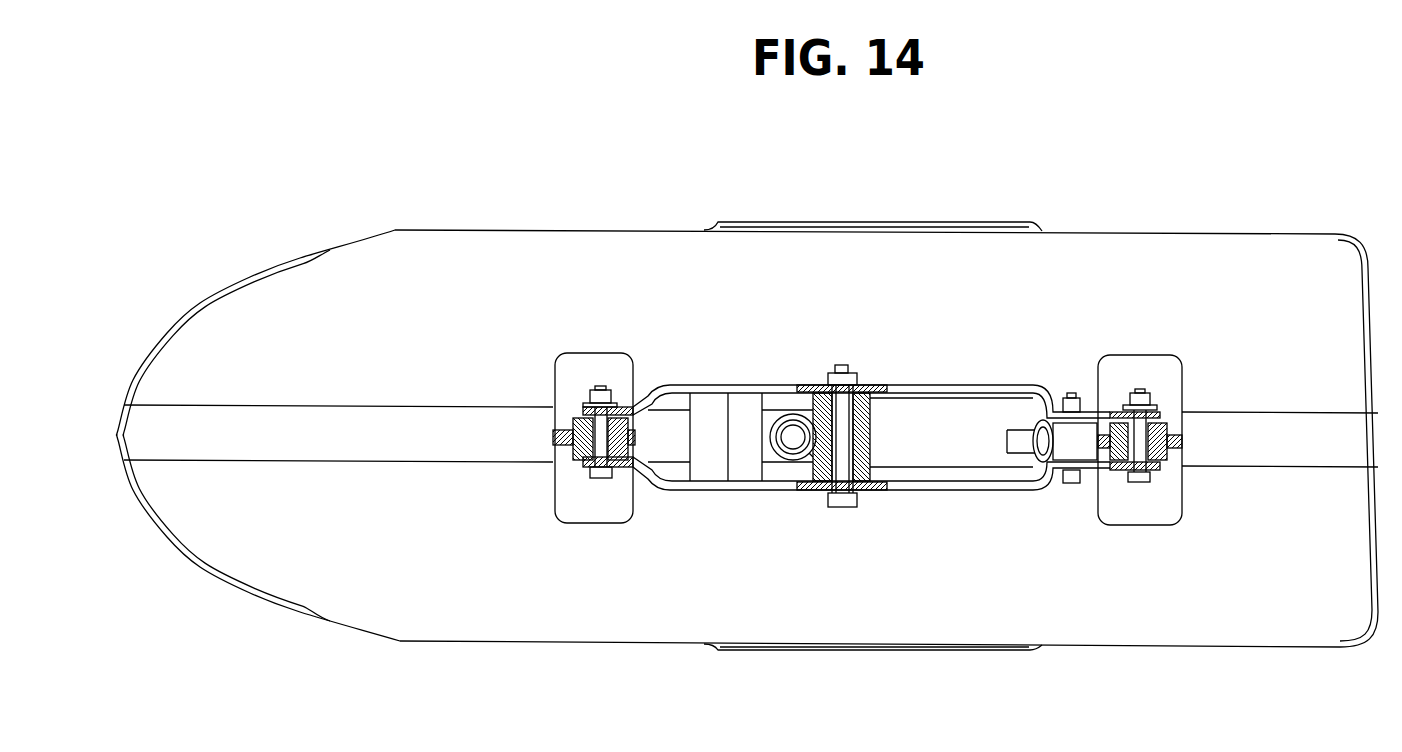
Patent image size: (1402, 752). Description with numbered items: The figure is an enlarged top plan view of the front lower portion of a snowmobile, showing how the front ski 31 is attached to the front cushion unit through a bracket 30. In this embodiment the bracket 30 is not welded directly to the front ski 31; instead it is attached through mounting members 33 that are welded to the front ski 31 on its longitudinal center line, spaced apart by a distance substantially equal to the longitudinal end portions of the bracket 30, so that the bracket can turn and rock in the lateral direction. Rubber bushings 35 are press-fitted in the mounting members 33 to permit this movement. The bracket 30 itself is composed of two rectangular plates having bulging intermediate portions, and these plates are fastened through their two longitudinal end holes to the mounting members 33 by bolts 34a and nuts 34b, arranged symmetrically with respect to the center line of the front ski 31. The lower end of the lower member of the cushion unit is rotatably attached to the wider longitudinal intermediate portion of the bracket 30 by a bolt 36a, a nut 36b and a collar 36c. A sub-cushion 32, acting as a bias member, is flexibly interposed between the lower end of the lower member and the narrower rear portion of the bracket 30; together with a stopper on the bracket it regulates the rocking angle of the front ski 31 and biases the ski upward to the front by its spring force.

The bracket 30 is at (970, 386).
The front ski 31 is at (430, 229).
The sub-cushion 32 is at (1025, 455).
The mounting members 33 is at (598, 352).
The bolts 34a is at (600, 480).
The nuts 34b is at (612, 395).
The rubber bushings 35 is at (575, 462).
The bolt 36a is at (840, 508).
The nut 36b is at (852, 372).
The collar 36c is at (812, 490).